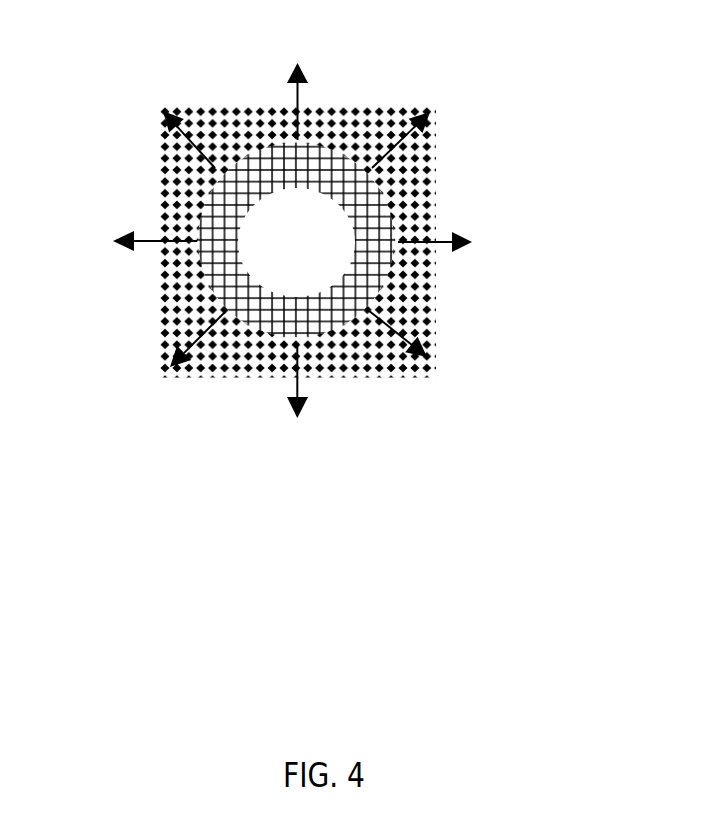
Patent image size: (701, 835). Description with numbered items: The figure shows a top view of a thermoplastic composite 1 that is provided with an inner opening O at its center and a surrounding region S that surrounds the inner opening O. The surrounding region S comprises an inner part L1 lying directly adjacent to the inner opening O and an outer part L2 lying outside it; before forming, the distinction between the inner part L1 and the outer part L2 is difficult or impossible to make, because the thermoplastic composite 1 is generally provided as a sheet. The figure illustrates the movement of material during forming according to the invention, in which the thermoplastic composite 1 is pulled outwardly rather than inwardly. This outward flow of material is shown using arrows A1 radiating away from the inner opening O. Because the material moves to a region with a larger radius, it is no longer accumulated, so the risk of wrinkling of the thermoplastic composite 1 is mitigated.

The thermoplastic composite 1 is at (373, 256).
The arrows A1 is at (297, 78).
The inner opening O is at (265, 243).
The inner part L1 is at (380, 258).
The outer part L2 is at (380, 370).
The surrounding region S is at (416, 302).